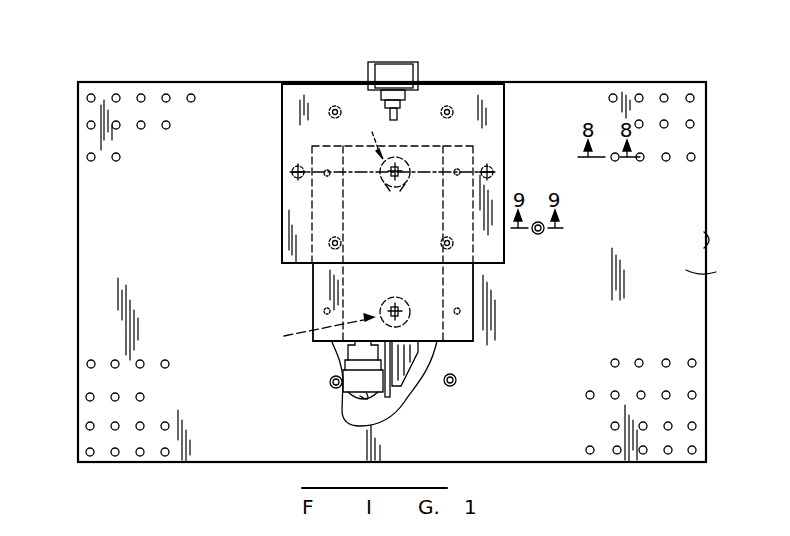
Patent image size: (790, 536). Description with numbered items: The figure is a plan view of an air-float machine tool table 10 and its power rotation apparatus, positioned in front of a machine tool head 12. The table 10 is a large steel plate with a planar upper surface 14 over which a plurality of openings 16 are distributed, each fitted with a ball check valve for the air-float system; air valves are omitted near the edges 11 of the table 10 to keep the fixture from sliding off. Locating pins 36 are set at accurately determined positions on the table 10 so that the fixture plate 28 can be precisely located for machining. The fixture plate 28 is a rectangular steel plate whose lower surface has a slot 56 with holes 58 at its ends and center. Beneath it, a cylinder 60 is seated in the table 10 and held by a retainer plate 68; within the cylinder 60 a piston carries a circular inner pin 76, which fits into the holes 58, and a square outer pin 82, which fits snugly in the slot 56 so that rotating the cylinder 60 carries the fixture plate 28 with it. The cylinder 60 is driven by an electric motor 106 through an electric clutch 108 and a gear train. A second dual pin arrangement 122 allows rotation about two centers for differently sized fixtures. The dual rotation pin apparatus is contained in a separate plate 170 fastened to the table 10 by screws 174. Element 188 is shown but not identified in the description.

The air-float machine tool table 10 is at (703, 193).
The edges of table 11 is at (703, 231).
The machine tool head 12 is at (403, 68).
The planar upper surface 14 is at (718, 272).
The openings 16 is at (668, 118).
The fixture plate 28 is at (494, 263).
The locating pins 36 is at (338, 105).
The slot 56 is at (457, 152).
The holes 58 is at (297, 165).
The cylinder 60 is at (405, 300).
The retainer plate 68 is at (405, 158).
The inner pin 76 is at (404, 184).
The outer pin 82 is at (392, 300).
The electric motor 106 is at (366, 399).
The electric clutch 108 is at (348, 362).
The second dual pin arrangement 122 is at (318, 229).
The separate plate 170 is at (313, 283).
The screws 174 is at (322, 312).
The coupling pin 188 is at (384, 182).